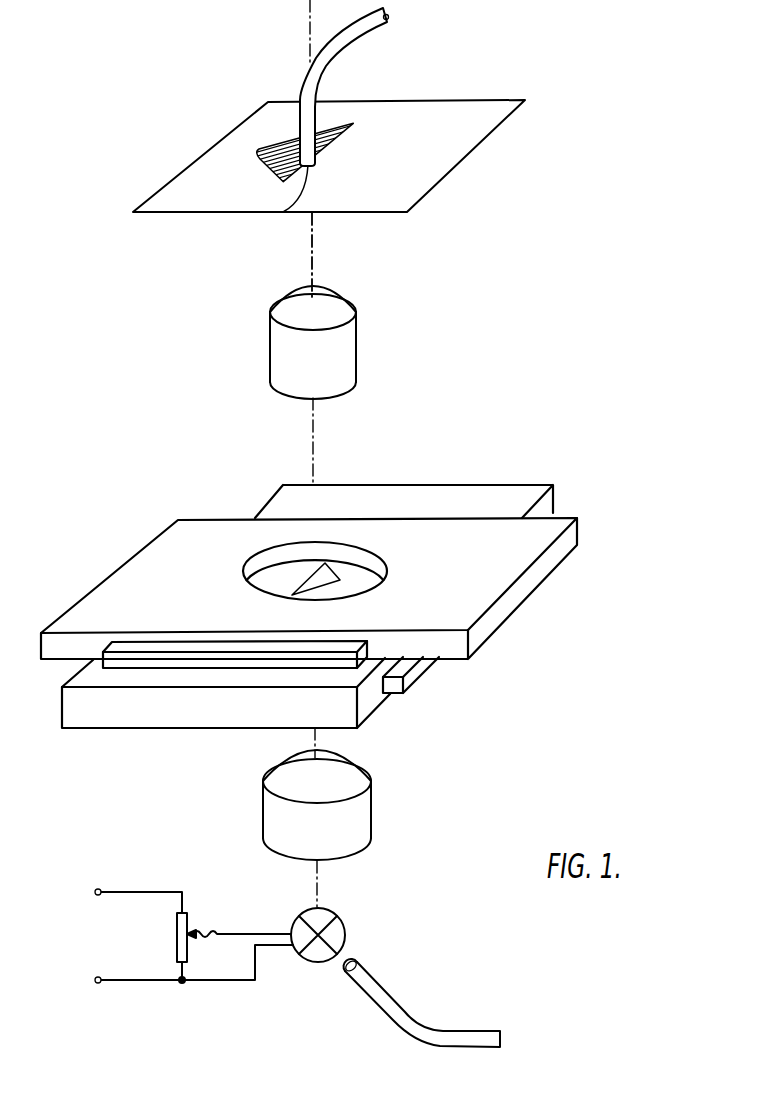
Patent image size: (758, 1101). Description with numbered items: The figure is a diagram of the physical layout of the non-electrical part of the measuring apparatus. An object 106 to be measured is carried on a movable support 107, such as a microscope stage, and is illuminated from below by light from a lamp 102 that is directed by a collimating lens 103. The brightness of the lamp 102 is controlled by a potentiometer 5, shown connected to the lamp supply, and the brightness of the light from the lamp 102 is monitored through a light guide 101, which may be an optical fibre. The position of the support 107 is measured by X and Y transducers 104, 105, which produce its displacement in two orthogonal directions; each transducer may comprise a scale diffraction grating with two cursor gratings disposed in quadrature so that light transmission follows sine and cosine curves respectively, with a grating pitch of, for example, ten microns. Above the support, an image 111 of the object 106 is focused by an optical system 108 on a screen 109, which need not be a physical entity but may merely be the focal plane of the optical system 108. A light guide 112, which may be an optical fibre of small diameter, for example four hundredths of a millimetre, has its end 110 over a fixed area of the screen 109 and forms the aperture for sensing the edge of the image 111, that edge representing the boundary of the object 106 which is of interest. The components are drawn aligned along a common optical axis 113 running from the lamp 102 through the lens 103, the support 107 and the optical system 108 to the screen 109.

The light guide 101 is at (397, 1013).
The lamp 102 is at (338, 933).
The collimating lens 103 is at (363, 812).
The X transducer 104 is at (418, 673).
The Y transducer 105 is at (342, 658).
The object 106 is at (313, 580).
The movable support 107 is at (480, 493).
The optical system 108 is at (345, 358).
The screen 109 is at (420, 181).
The end of light guide 110 is at (285, 200).
The image 111 is at (272, 150).
The light guide 112 is at (347, 60).
The optical axis 113 is at (312, 263).
The potentiometer 5 is at (187, 913).